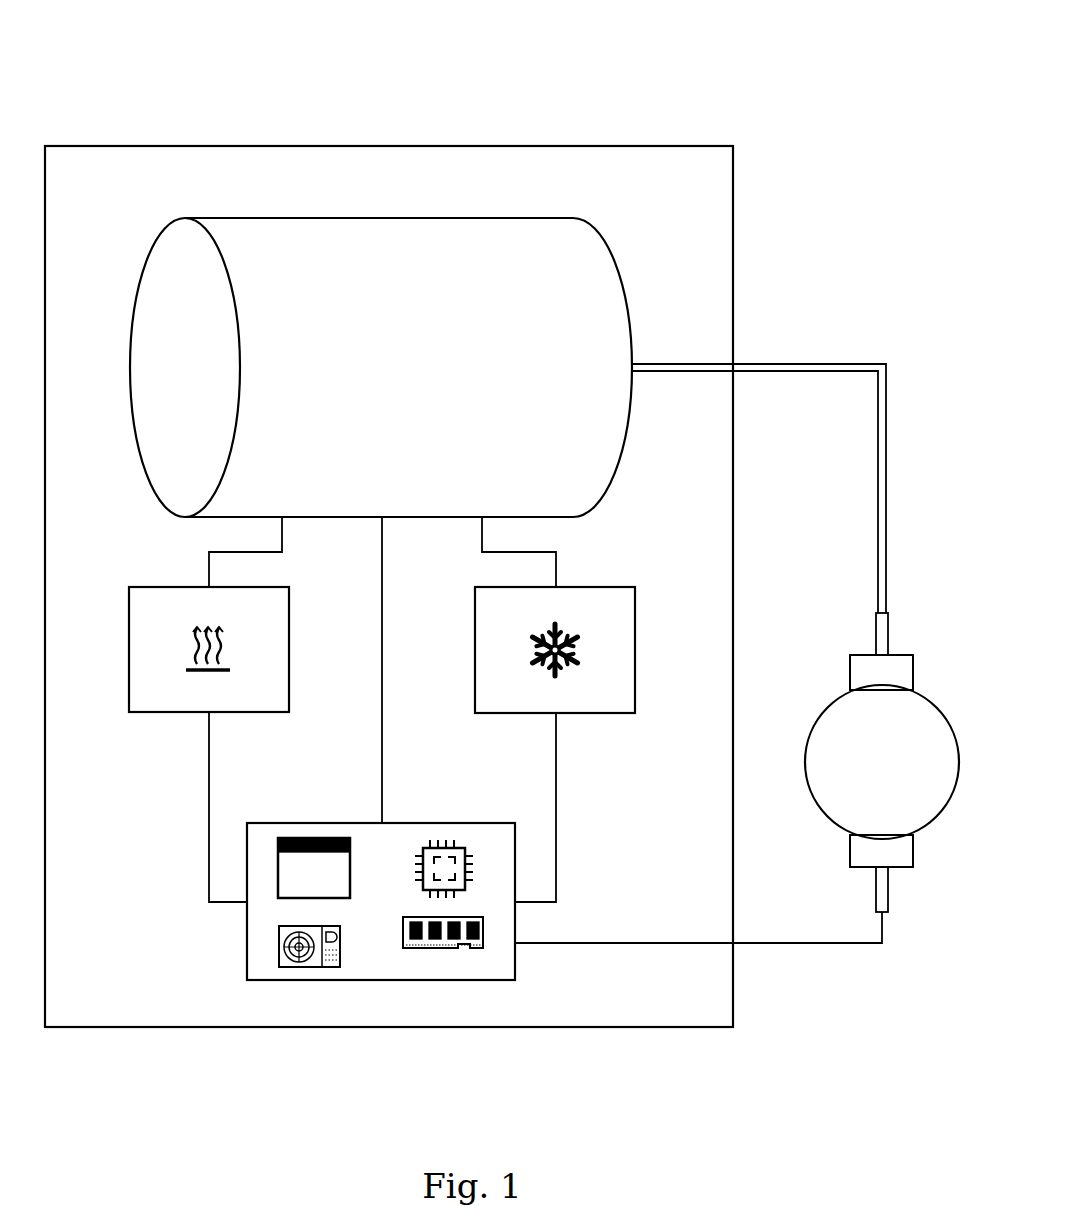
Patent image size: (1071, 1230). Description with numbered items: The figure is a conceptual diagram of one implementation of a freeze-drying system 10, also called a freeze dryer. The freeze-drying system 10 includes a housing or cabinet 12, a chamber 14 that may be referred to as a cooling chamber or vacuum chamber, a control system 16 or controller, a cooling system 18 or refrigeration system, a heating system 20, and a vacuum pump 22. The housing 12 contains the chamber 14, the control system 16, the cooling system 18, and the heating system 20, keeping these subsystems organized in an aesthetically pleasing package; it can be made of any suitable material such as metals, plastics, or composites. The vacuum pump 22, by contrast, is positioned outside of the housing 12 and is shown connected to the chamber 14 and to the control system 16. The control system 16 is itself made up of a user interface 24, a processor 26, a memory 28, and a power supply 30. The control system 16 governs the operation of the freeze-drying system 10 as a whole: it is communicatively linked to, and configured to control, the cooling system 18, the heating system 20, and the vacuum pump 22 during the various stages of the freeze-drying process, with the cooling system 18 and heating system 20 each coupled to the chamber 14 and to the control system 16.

The freeze-drying system 10 is at (868, 102).
The housing 12 is at (638, 146).
The chamber 14 is at (436, 237).
The control system 16 is at (355, 920).
The cooling system 18 is at (621, 656).
The heating system 20 is at (165, 704).
The vacuum pump 22 is at (845, 800).
The user interface 24 is at (316, 858).
The processor 26 is at (447, 857).
The memory 28 is at (456, 945).
The power supply 30 is at (273, 963).